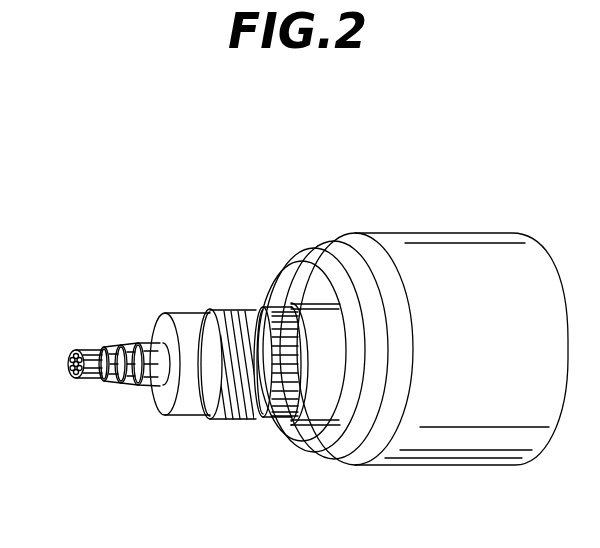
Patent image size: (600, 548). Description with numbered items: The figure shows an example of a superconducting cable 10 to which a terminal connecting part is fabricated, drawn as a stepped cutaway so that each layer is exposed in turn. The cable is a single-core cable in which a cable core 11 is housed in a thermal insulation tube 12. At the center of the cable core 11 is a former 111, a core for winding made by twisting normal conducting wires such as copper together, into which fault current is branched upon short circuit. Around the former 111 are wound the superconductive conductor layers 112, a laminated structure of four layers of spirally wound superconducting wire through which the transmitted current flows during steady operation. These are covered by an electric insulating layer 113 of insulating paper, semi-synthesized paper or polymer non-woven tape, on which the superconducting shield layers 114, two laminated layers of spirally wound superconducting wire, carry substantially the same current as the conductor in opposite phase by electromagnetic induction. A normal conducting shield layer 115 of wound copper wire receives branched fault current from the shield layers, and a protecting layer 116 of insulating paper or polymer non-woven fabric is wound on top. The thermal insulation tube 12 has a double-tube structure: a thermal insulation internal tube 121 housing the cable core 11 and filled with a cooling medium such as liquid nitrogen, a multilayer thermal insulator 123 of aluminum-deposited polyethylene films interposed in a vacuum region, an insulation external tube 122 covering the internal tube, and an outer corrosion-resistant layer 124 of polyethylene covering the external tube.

The superconducting cable 10 is at (204, 244).
The cable core 11 is at (318, 486).
The former 111 is at (83, 378).
The superconductive conductor layers 112 is at (149, 378).
The electric insulating layer 113 is at (192, 405).
The superconducting shield layers 114 is at (248, 406).
The normal conducting shield layer 115 is at (280, 406).
The protecting layer 116 is at (322, 406).
The thermal insulation tube 12 is at (475, 147).
The thermal insulation internal tube 121 is at (296, 263).
The multilayer thermal insulator 123 is at (338, 263).
The insulation external tube 122 is at (383, 265).
The corrosion-resistant layer 124 is at (433, 265).